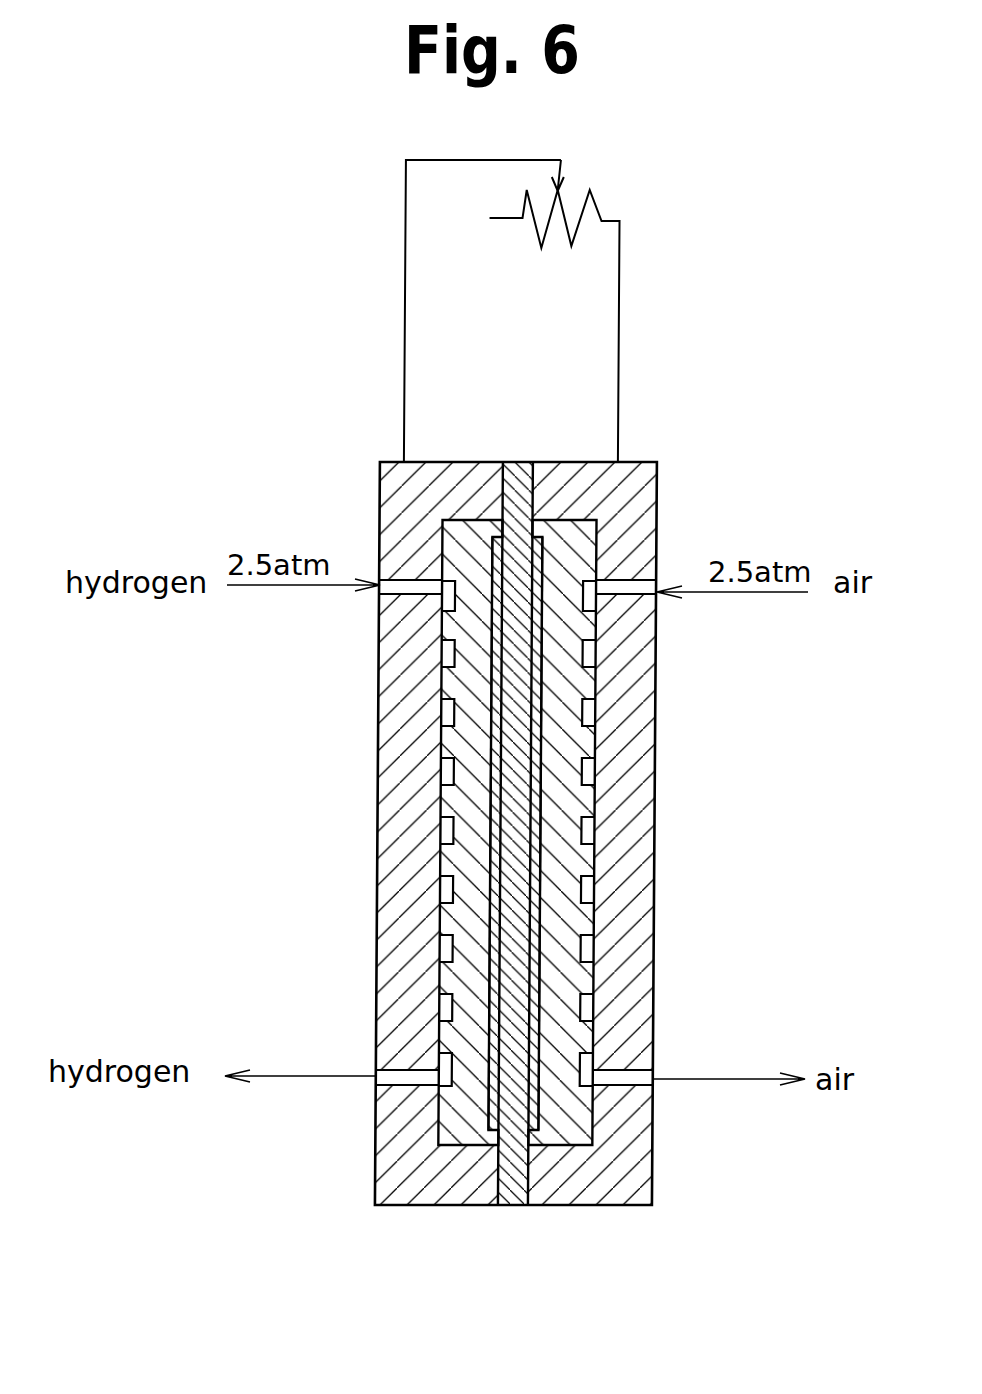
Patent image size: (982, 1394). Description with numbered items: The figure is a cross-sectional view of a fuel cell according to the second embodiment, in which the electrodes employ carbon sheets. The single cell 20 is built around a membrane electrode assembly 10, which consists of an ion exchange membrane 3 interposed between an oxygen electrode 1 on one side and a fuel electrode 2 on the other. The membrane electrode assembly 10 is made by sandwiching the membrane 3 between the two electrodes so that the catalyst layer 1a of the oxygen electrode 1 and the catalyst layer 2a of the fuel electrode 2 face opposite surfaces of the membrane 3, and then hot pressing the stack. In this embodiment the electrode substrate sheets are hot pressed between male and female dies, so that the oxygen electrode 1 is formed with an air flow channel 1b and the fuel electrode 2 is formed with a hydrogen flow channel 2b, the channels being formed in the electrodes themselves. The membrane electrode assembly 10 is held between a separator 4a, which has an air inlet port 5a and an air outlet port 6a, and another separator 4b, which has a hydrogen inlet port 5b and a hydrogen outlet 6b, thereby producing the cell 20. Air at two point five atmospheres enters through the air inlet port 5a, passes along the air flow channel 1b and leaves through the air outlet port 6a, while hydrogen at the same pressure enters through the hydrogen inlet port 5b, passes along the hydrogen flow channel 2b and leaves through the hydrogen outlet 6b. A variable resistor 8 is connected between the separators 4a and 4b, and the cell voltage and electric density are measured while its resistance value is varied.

The oxygen electrode 1 is at (573, 1112).
The catalyst layer 1a is at (533, 1130).
The air flow channel 1b is at (585, 775).
The fuel electrode 2 is at (458, 1112).
The catalyst layer 2a is at (492, 1130).
The hydrogen flow channel 2b is at (447, 775).
The ion exchange membrane 3 is at (508, 1175).
The separator 4a is at (632, 488).
The separator 4b is at (400, 497).
The air inlet port 5a is at (633, 592).
The hydrogen inlet port 5b is at (404, 580).
The air outlet port 6a is at (637, 1080).
The hydrogen outlet 6b is at (400, 1090).
The variable resistor 8 is at (562, 205).
The membrane electrode assembly 10 is at (524, 444).
The single cell 20 is at (676, 919).